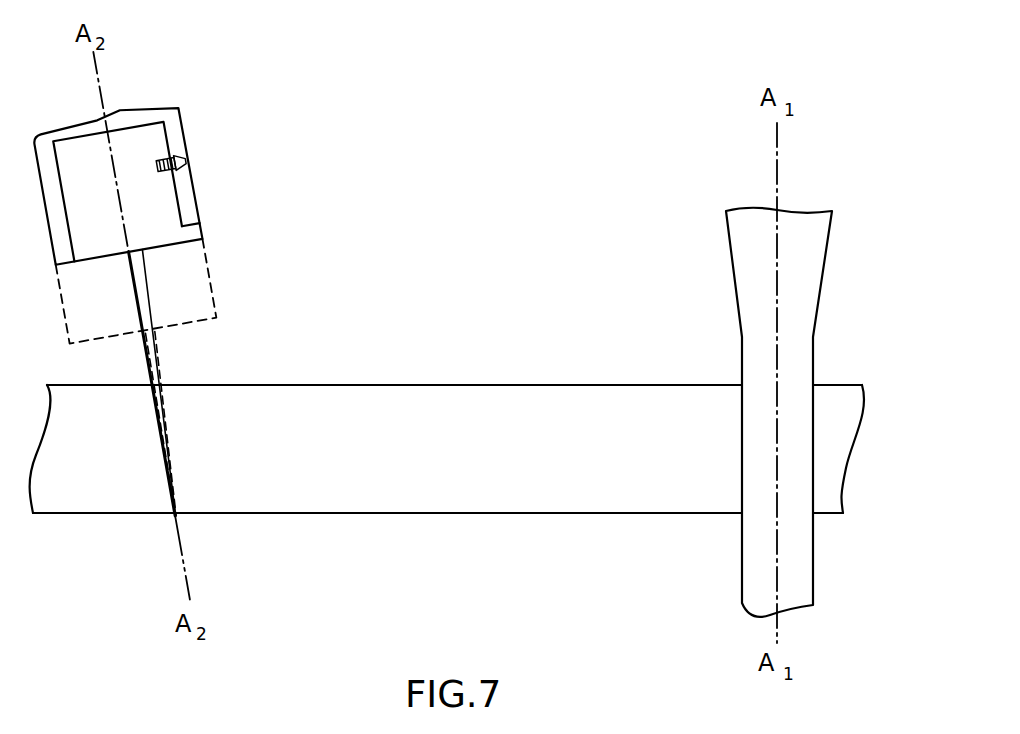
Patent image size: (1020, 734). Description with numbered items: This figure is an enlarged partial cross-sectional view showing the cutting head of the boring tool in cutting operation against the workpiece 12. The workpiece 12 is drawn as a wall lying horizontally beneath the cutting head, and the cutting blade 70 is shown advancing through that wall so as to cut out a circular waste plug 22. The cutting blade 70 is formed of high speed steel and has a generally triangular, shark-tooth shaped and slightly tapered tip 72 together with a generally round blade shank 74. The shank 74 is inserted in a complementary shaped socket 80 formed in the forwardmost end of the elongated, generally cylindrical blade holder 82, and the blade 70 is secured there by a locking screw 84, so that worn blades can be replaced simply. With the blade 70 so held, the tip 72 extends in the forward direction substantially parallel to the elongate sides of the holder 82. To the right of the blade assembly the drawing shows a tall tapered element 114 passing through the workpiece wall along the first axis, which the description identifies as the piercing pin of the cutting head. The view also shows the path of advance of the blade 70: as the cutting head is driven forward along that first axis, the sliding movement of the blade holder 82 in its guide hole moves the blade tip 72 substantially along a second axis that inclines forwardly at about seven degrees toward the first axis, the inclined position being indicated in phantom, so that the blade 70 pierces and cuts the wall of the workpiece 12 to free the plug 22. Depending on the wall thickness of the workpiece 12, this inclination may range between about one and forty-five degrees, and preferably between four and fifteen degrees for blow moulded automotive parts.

The workpiece 12 is at (118, 485).
The circular waste plug 22 is at (450, 398).
The cutting blade 70 is at (144, 267).
The tip 72 is at (145, 322).
The blade shank 74 is at (131, 137).
The socket 80 is at (199, 224).
The blade holder 82 is at (176, 122).
The locking screw 84 is at (186, 166).
The post / guide rod 114 is at (750, 358).